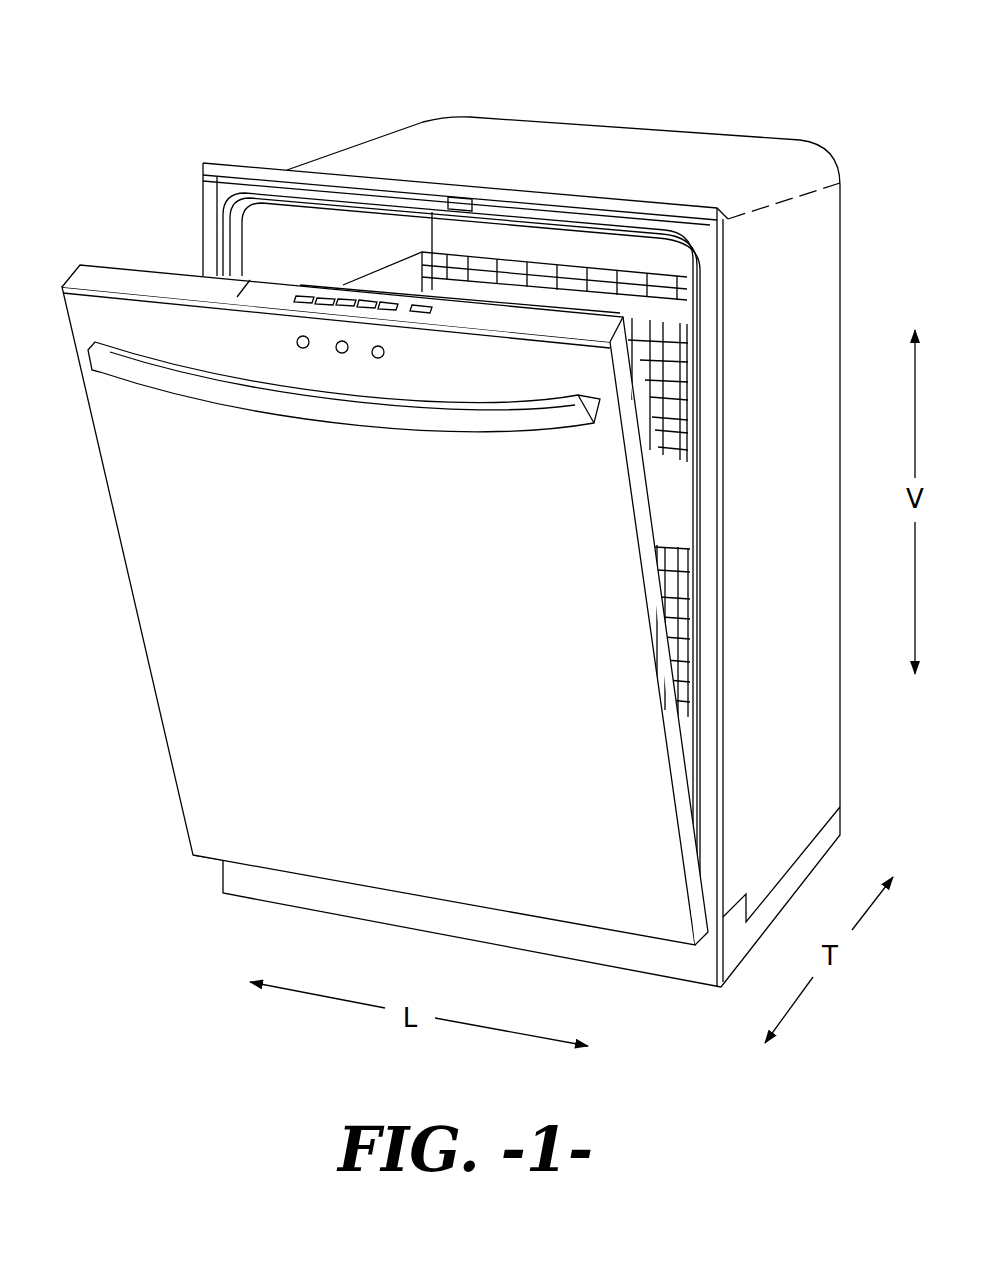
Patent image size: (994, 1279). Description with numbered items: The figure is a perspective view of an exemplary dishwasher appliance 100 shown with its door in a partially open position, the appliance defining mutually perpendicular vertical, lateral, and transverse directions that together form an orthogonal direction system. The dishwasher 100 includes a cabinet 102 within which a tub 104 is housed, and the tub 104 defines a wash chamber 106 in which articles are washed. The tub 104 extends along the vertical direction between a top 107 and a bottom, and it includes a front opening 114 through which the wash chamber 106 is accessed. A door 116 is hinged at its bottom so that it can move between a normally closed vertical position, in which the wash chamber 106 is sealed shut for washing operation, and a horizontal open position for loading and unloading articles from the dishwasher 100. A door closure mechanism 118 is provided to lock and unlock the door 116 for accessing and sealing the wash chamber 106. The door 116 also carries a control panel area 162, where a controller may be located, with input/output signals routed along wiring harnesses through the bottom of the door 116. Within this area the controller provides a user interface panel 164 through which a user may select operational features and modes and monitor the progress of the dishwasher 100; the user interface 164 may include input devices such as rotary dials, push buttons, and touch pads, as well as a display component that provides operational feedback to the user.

The dishwasher appliance 100 is at (228, 97).
The cabinet 102 is at (735, 157).
The tub 104 is at (312, 200).
The wash chamber 106 is at (400, 243).
The top 107 is at (288, 205).
The front opening 114 is at (577, 257).
The door 116 is at (170, 663).
The door closure mechanism 118 is at (463, 199).
The control panel area 162 is at (148, 283).
The user interface panel 164 is at (383, 313).